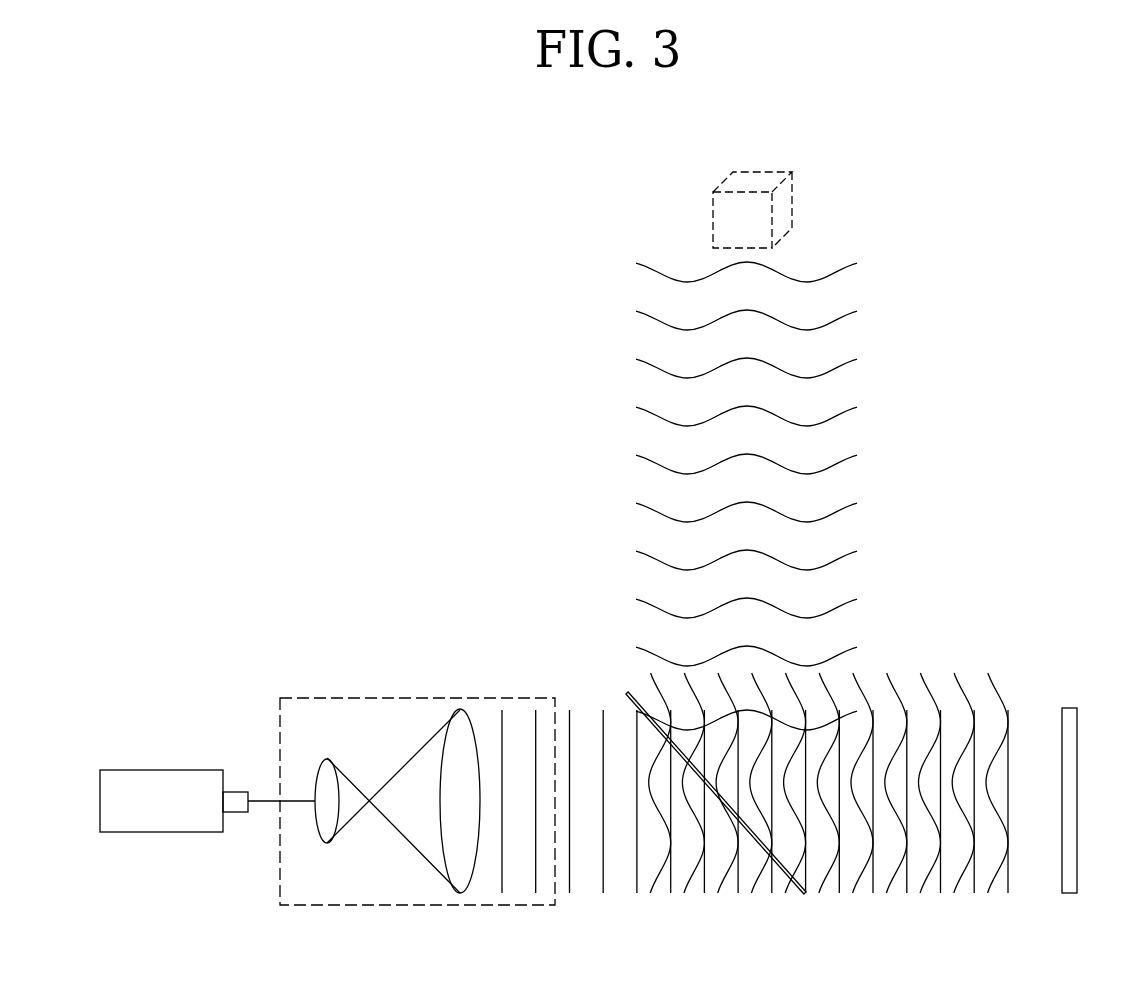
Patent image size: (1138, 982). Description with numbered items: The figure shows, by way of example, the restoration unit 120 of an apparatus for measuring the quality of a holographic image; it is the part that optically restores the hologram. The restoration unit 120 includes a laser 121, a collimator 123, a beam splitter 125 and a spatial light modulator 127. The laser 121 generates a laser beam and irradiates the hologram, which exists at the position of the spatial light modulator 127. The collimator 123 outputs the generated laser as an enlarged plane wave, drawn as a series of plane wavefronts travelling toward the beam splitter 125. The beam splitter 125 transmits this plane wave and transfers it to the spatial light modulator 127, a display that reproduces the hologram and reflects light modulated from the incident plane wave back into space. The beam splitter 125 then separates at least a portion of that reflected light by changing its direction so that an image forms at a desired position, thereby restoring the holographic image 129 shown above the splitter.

The restoration unit 120 is at (487, 590).
The laser 121 is at (188, 770).
The collimator 123 is at (477, 698).
The beam splitter 125 is at (805, 893).
The spatial light modulator 127 is at (1068, 707).
The holographic image 129 is at (792, 206).